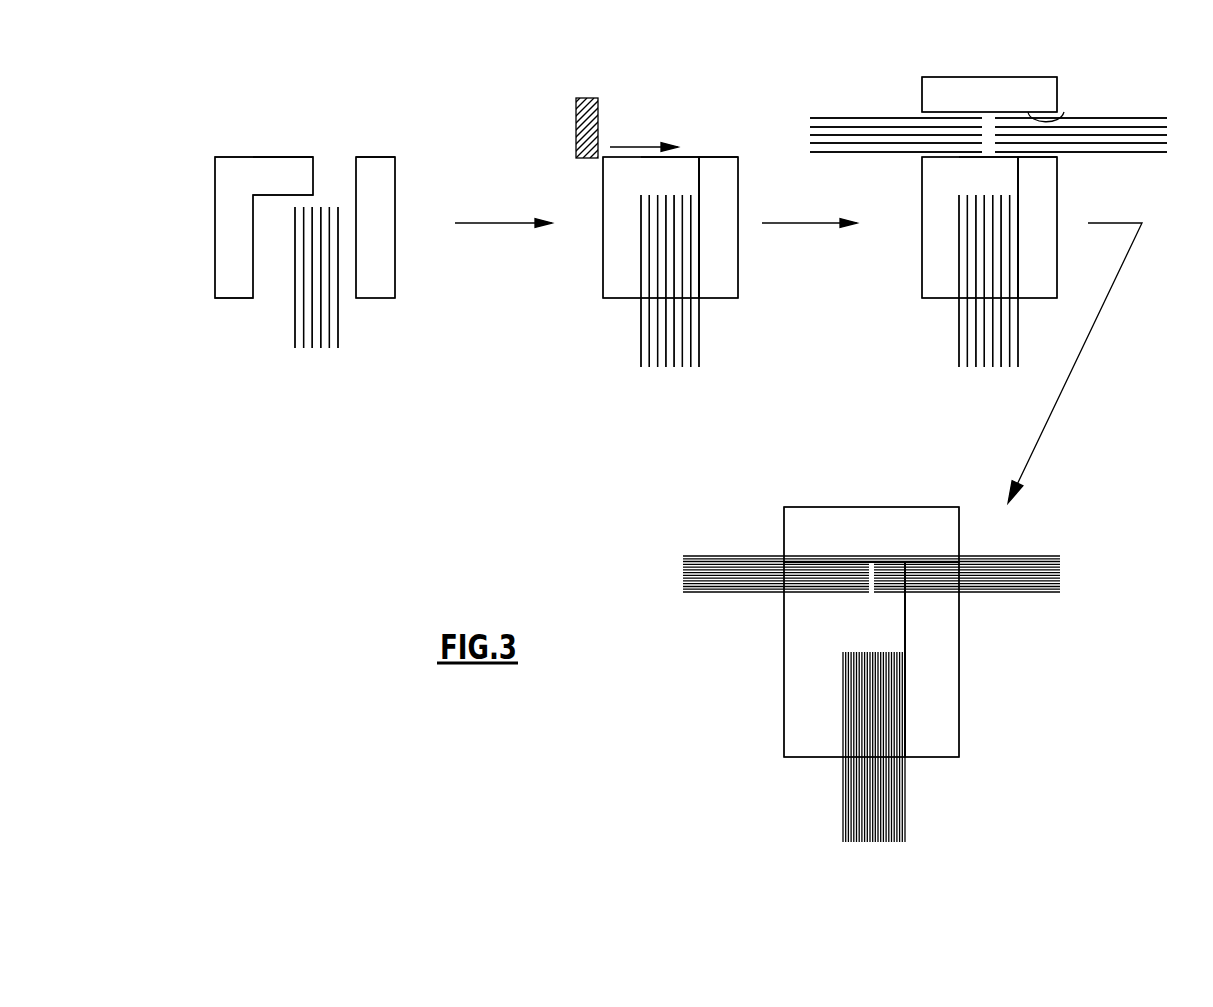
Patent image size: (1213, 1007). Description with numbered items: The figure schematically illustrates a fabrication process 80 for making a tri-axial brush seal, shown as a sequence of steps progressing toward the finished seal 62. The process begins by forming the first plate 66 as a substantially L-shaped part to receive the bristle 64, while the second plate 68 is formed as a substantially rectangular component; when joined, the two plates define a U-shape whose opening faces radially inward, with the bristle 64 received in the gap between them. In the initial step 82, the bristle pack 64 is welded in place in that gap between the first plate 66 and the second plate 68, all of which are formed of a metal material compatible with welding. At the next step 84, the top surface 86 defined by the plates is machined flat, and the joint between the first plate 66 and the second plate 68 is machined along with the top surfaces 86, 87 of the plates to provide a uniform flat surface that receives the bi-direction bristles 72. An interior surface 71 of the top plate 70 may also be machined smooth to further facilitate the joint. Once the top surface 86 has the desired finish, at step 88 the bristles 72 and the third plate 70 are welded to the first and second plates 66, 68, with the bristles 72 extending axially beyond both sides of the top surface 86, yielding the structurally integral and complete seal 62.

The seal 62 is at (1057, 658).
The bristle 64 is at (308, 316).
The first plate 66 is at (230, 253).
The second plate 68 is at (377, 273).
The third plate 70 is at (1022, 88).
The interior surface 71 is at (1065, 112).
The bristles 72 is at (903, 133).
The process 80 is at (374, 483).
The initial step 82 is at (204, 132).
The step 84 is at (680, 88).
The top surface 86 is at (284, 157).
The top surface 87 is at (378, 157).
The step 88 is at (1134, 86).